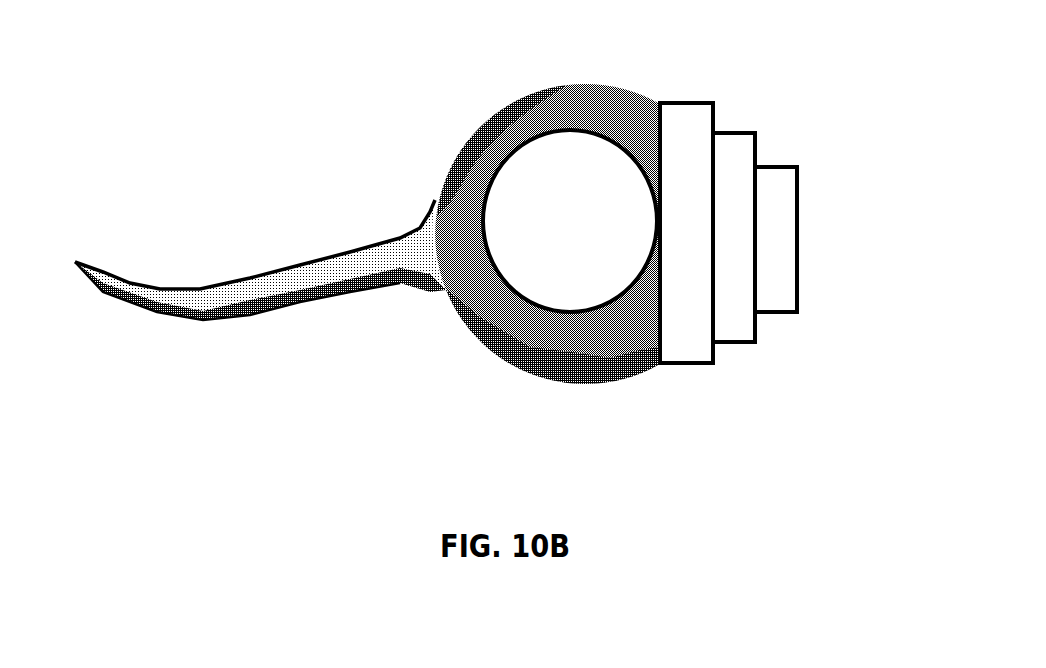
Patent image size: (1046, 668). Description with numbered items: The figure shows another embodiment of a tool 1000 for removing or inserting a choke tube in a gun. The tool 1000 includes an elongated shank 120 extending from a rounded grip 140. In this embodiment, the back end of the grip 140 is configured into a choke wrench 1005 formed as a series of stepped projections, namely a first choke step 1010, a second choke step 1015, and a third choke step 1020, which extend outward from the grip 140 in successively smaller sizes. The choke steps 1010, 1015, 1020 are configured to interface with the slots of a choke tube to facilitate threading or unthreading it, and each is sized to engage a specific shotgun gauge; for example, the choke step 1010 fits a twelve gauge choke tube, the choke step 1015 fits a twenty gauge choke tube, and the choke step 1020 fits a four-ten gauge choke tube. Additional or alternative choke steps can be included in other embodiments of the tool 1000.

The shank 120 is at (203, 272).
The grip 140 is at (589, 85).
The tool 1000 is at (515, 242).
The choke wrench 1005 is at (807, 291).
The choke step 1010 is at (690, 373).
The choke step 1015 is at (755, 347).
The choke step 1020 is at (813, 298).